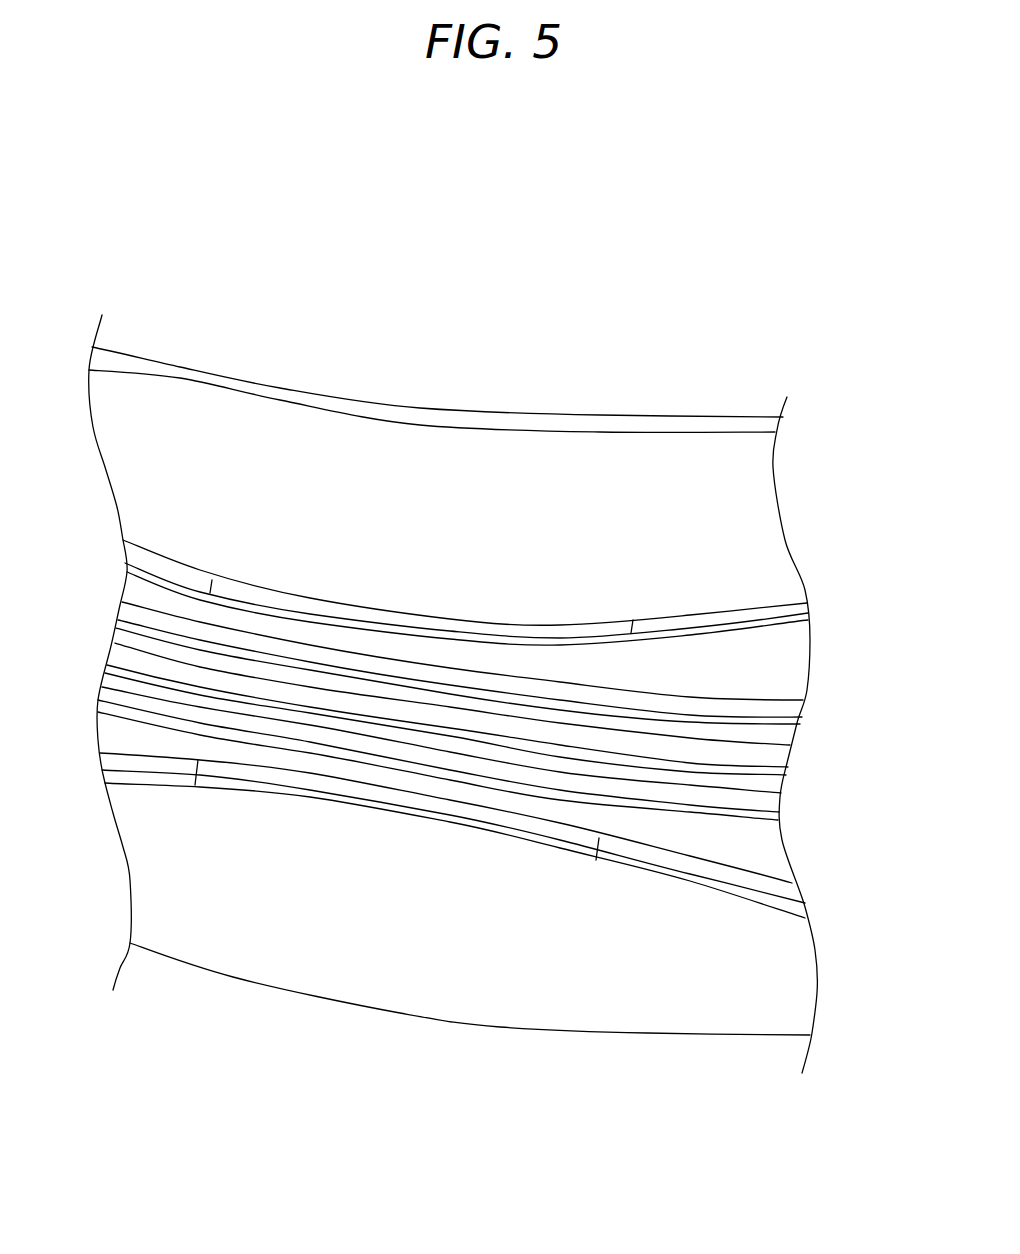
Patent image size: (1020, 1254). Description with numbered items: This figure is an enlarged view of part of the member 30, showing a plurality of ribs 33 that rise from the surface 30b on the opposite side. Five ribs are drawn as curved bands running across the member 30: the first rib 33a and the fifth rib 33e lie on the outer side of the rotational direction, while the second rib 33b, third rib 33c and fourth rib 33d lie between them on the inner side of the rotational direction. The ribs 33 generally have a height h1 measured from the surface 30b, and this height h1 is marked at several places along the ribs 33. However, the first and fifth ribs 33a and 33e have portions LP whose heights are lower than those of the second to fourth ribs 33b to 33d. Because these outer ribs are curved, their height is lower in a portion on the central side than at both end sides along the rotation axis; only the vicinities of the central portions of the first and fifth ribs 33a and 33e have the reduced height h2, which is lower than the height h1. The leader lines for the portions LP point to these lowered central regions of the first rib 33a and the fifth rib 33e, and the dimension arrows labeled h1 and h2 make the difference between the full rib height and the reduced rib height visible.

The tire 30 is at (675, 295).
The surface 30b is at (503, 450).
The ribs 33 is at (501, 743).
The first rib 33a is at (750, 613).
The second rib 33b is at (753, 708).
The third rib 33c is at (747, 758).
The fourth rib 33d is at (737, 800).
The fifth rib 33e is at (737, 882).
The portions LP is at (551, 627).
The height h1 is at (167, 603).
The height h2 is at (340, 646).